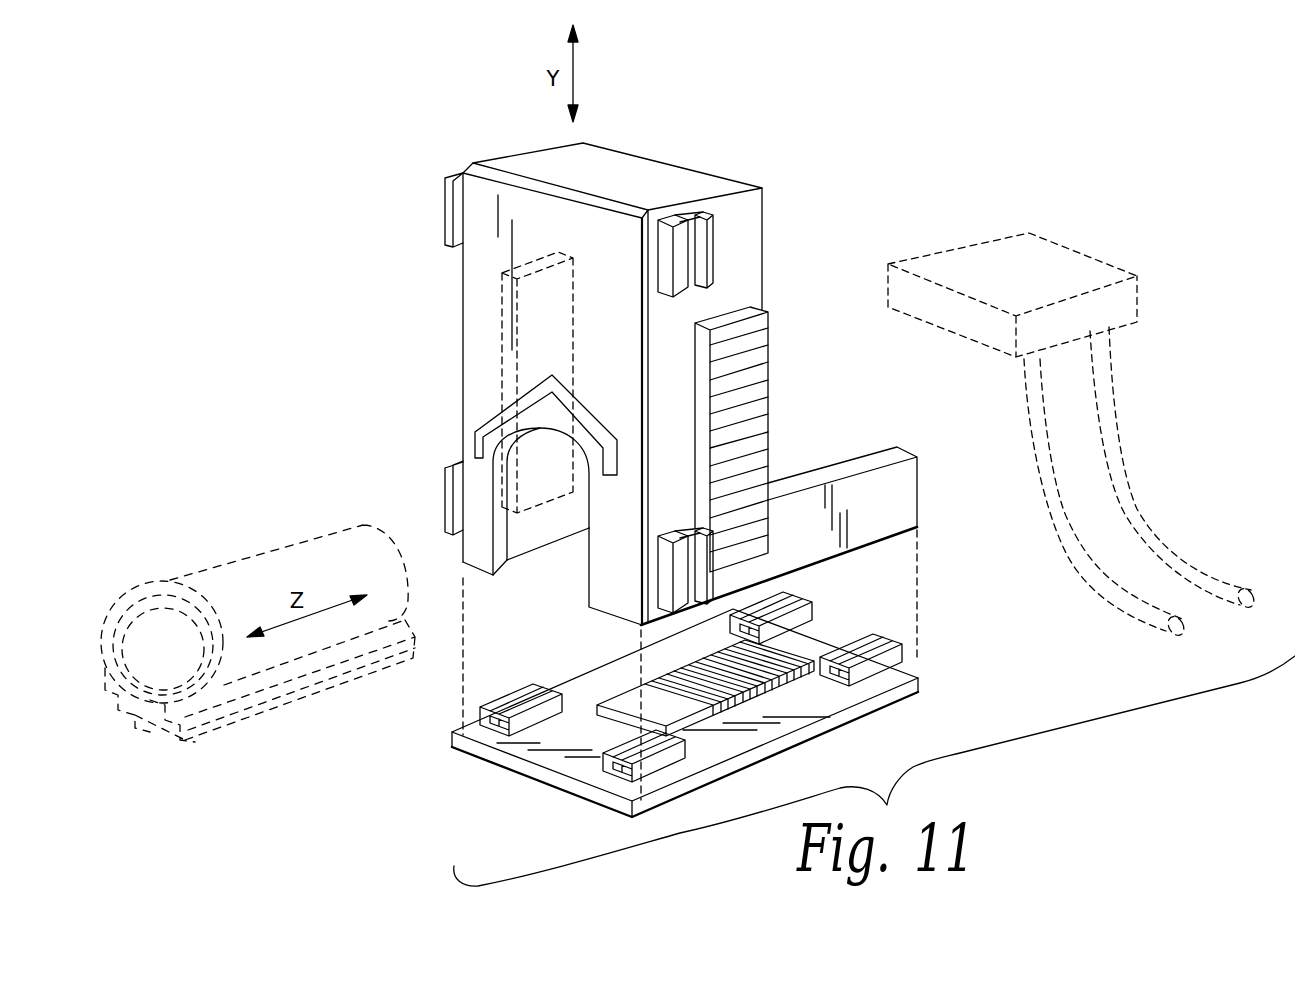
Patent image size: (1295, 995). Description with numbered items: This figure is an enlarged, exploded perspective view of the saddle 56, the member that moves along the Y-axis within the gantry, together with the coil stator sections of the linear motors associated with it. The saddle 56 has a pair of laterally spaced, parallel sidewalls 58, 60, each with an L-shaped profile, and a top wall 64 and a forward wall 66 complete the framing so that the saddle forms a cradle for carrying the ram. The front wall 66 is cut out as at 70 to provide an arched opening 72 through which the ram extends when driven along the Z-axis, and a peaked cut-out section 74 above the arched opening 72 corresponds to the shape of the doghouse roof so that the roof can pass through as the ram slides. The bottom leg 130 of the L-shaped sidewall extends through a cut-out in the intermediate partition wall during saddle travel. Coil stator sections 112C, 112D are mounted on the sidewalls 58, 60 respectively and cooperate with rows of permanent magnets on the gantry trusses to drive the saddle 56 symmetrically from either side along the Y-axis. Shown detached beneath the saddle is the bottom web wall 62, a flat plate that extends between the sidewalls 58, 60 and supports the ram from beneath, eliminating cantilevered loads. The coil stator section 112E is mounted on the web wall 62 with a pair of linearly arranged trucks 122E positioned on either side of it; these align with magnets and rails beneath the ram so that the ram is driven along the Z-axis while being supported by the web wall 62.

The saddle 56 is at (433, 155).
The sidewall 58 is at (518, 542).
The sidewall 60 is at (742, 244).
The detachable web wall 62 is at (895, 700).
The top wall 64 is at (708, 188).
The forward wall 66 is at (482, 325).
The cut out 70 is at (493, 562).
The arched opening 72 is at (550, 579).
The peaked cut-out section 74 is at (478, 440).
The coil stator section 112C is at (530, 350).
The coil stator section 112D is at (755, 397).
The coil stator section 112E is at (797, 690).
The trucks 122E is at (812, 619).
The bottom leg 130 is at (884, 480).